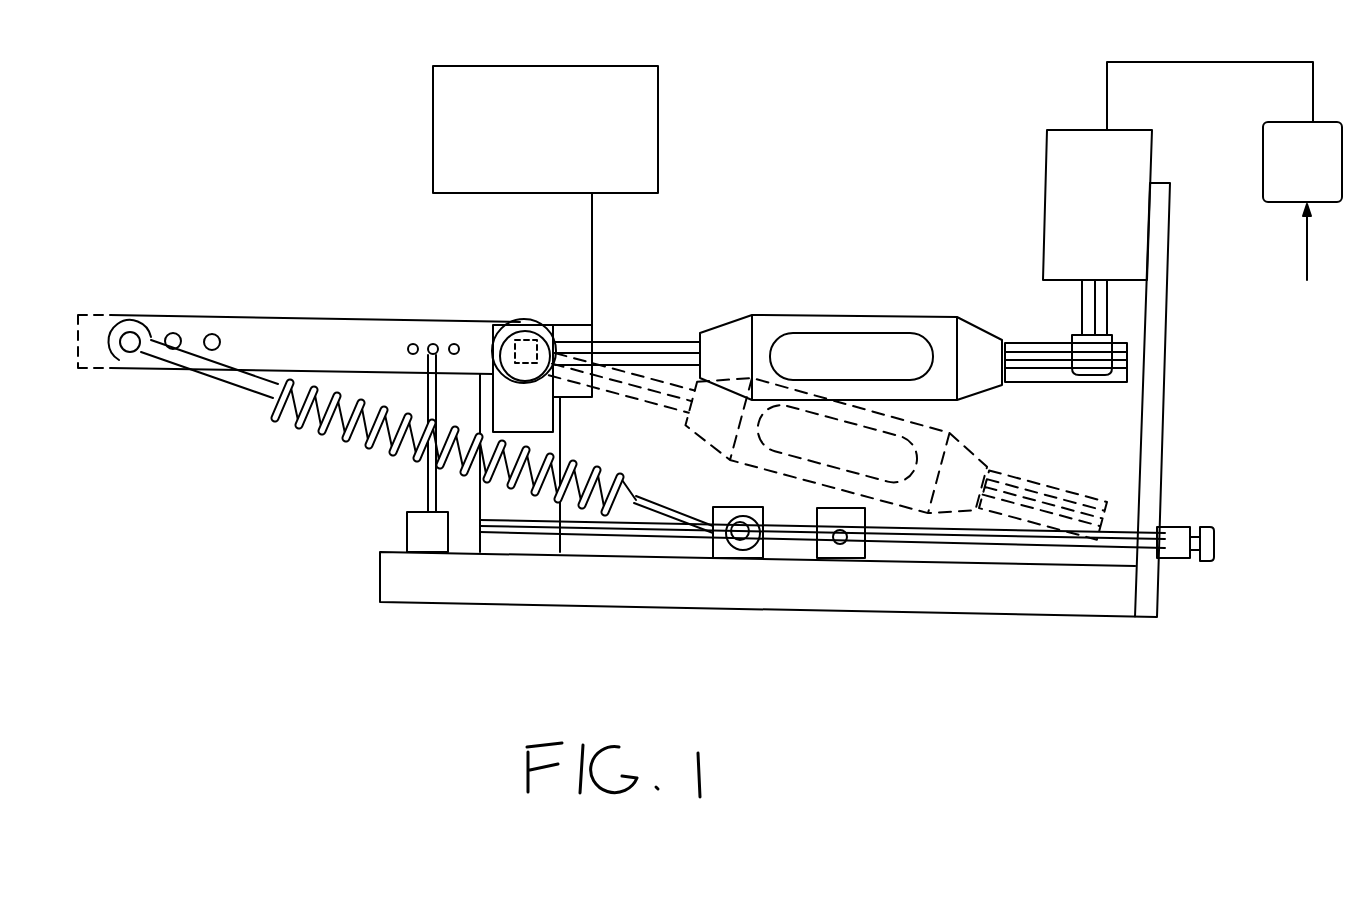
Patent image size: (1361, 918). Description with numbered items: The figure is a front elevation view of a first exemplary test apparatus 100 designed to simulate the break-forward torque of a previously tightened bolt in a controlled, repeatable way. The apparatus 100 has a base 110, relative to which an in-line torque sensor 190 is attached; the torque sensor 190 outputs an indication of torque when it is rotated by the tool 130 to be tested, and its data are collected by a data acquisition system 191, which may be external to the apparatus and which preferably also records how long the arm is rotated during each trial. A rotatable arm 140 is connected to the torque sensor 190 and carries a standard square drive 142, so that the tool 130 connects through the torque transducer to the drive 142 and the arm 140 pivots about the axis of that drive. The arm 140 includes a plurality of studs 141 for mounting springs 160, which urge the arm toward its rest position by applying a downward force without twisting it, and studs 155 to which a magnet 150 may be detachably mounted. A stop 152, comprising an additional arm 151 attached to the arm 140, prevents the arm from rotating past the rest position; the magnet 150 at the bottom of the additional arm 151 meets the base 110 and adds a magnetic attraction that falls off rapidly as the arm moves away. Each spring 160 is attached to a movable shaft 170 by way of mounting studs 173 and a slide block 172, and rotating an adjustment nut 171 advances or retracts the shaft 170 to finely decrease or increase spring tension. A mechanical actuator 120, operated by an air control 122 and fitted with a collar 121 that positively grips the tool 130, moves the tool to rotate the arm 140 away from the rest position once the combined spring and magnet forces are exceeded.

The test apparatus 100 is at (295, 655).
The base 110 is at (1050, 618).
The mechanical actuator 120 is at (1084, 184).
The collar 121 is at (1072, 338).
The air control 122 is at (1282, 122).
The tool 130 is at (822, 300).
The rotatable arm 140 is at (313, 318).
The studs 141 is at (228, 323).
The square drive 142 is at (510, 318).
The magnet 150 is at (407, 520).
The additional arm 151 is at (425, 472).
The stop 152 is at (410, 462).
The studs 155 is at (454, 344).
The springs 160 is at (280, 402).
The movable shaft 170 is at (880, 546).
The adjustment nut 171 is at (1192, 527).
The slide block 172 is at (736, 505).
The mounting studs 173 is at (742, 525).
The in-line torque sensor 190 is at (553, 418).
The data acquisition system 191 is at (612, 67).